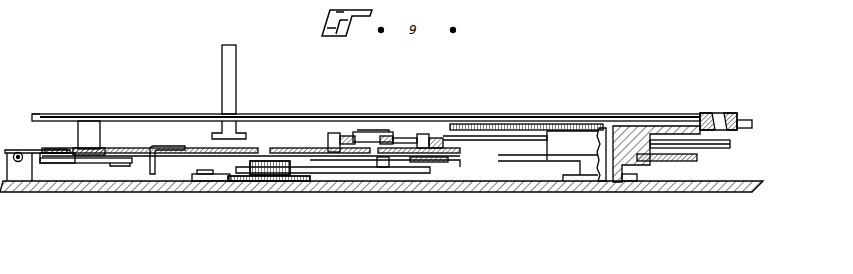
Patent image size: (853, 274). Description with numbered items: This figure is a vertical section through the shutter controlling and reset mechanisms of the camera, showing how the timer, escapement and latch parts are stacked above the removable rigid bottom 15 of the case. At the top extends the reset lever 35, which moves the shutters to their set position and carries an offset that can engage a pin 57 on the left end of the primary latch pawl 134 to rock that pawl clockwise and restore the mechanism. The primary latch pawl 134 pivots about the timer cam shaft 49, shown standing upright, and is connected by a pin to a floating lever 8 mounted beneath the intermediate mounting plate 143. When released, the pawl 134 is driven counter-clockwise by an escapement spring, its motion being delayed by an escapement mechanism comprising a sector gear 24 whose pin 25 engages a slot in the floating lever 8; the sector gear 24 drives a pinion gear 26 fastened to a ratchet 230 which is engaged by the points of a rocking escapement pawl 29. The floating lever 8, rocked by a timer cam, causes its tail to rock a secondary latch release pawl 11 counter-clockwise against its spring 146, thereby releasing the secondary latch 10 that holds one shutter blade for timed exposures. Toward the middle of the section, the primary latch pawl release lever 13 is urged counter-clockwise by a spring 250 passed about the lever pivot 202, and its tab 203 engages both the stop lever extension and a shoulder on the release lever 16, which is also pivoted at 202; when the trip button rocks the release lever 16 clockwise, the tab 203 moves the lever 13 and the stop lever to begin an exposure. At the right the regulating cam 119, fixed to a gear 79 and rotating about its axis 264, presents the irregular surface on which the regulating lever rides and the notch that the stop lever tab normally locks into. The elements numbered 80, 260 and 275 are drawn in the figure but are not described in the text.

The floating lever 8 is at (452, 162).
The secondary latch 10 is at (100, 163).
The secondary latch release pawl 11 is at (50, 160).
The primary latch pawl release lever 13 is at (393, 138).
The bottom 15 is at (762, 183).
The release lever 16 is at (730, 147).
The sector gear 24 is at (333, 170).
The pin 25 is at (392, 164).
The pinion gear 26 is at (248, 164).
The rocking escapement pawl 29 is at (190, 178).
The reset lever 35 is at (478, 112).
The timer cam shaft 49 is at (234, 67).
The pin 57 is at (100, 133).
The gear 79 is at (752, 127).
The bracket 80 is at (150, 168).
The regulating cam 119 is at (698, 158).
The primary latch pawl 134 is at (262, 151).
The intermediate mounting plate 143 is at (38, 150).
The spring 146 is at (16, 152).
The lever pivot 202 is at (367, 131).
The tab 203 is at (425, 134).
The ratchet 230 is at (262, 180).
The spring 250 is at (410, 136).
The hatched block 260 is at (446, 143).
The axis 264 is at (608, 128).
The block 275 is at (716, 113).